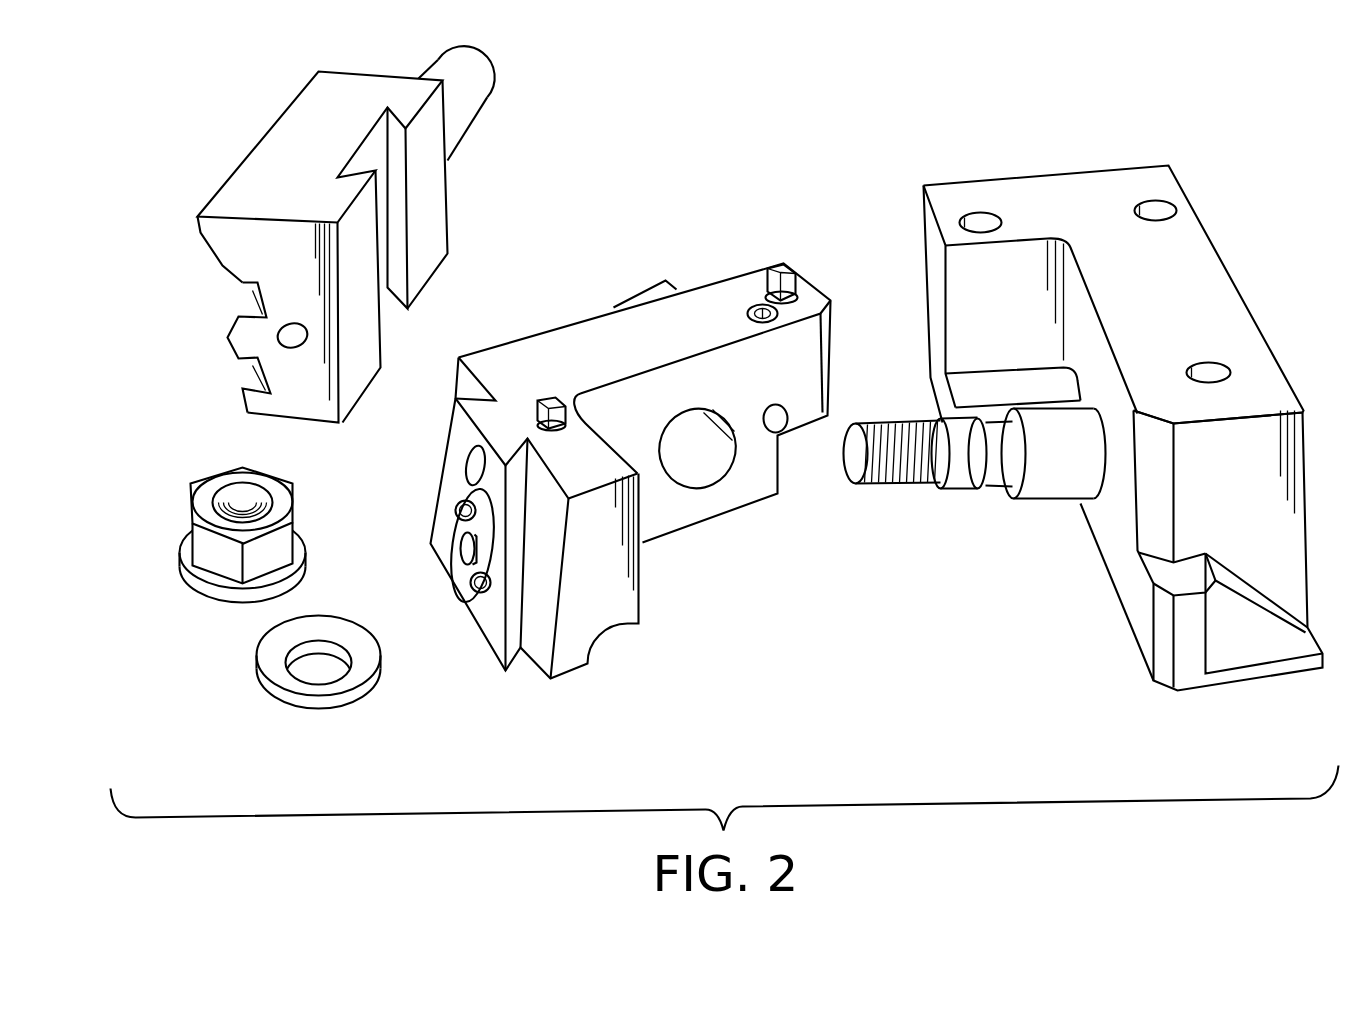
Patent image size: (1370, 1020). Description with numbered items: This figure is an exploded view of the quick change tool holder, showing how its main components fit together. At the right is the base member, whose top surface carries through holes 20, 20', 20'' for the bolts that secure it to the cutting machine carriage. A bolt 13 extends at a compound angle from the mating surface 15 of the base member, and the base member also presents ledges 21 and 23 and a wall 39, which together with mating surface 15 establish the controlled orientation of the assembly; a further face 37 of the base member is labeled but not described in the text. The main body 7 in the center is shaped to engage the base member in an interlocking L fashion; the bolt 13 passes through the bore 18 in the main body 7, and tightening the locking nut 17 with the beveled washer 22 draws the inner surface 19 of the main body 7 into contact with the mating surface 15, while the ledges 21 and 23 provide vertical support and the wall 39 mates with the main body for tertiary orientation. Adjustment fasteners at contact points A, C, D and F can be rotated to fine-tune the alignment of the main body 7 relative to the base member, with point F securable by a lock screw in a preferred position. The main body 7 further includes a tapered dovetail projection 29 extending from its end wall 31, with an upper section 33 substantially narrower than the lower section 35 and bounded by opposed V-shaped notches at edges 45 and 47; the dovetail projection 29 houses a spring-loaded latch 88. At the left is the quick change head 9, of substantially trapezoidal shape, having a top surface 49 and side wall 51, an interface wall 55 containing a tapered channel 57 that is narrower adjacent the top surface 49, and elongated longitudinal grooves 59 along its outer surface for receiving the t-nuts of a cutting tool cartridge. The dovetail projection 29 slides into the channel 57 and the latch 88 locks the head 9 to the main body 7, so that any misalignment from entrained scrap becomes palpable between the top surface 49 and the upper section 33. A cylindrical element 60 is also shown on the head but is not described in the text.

The main body 7 is at (718, 297).
The quick change head 9 is at (344, 233).
The bolt 13 is at (970, 477).
The mating surface 15 is at (1090, 340).
The locking nut 17 is at (223, 480).
The bore 18 is at (698, 465).
The inner surface 19 is at (596, 477).
The through hole 20 is at (958, 182).
The through hole 20' is at (1198, 192).
The through hole 20'' is at (1270, 347).
The ledge 21 is at (985, 380).
The beveled washer 22 is at (272, 658).
The ledge 23 is at (1178, 583).
The dovetail projection 29 is at (462, 437).
The end wall 31 is at (467, 388).
The upper section 33 is at (498, 430).
The lower section 35 is at (493, 627).
The bracket wall face 37 is at (1109, 406).
The wall 39 is at (1173, 551).
The edge 45 is at (520, 492).
The edge 47 is at (470, 357).
The top surface 49 is at (317, 110).
The side wall 51 is at (234, 320).
The interface wall 55 is at (424, 211).
The channel 57 is at (372, 157).
The elongated longitudinal grooves 59 is at (256, 306).
The cylindrical pin 60 is at (466, 100).
The spring-loaded latch 88 is at (462, 553).
The contact point A is at (777, 267).
The contact point C is at (548, 400).
The contact point D is at (465, 468).
The contact point F is at (793, 409).